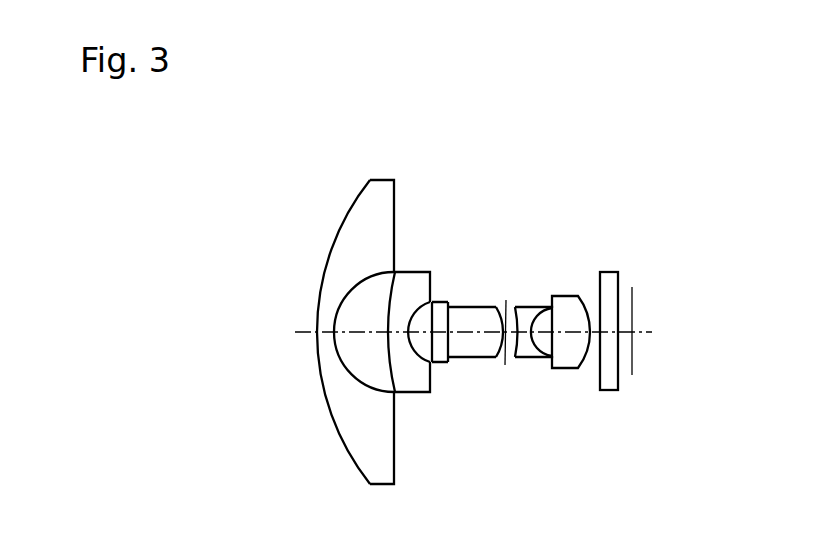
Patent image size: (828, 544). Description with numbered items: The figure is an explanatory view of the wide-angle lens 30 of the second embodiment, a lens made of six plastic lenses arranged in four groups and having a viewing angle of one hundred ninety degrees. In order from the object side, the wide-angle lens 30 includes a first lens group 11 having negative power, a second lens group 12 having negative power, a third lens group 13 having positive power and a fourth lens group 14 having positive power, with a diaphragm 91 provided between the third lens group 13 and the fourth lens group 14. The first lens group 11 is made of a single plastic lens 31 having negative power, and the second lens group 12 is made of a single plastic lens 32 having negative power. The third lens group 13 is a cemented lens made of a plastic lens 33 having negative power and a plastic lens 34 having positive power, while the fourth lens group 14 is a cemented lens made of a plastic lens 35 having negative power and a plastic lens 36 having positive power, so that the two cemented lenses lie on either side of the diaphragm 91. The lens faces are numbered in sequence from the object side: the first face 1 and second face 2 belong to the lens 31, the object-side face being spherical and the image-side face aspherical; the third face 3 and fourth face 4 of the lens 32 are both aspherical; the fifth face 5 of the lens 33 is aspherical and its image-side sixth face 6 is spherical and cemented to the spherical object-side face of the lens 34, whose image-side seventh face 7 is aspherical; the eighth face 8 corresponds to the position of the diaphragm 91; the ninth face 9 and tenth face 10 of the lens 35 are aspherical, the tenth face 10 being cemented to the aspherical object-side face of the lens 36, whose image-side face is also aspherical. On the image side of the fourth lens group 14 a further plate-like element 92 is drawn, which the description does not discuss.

The wide-angle lens 30 is at (616, 138).
The first lens group 11 is at (308, 332).
The plastic lens 31 is at (366, 209).
The second lens group 12 is at (432, 323).
The plastic lens 32 is at (420, 272).
The third lens group 13 is at (510, 197).
The fourth lens group 14 is at (623, 197).
The plastic lens 33 is at (439, 302).
The plastic lens 34 is at (478, 307).
The plastic lens 35 is at (521, 307).
The plastic lens 36 is at (566, 296).
The diaphragm 91 is at (506, 300).
The cover glass / filter plate 92 is at (608, 278).
The first face 1 is at (316, 343).
The second face 2 is at (340, 362).
The third face 3 is at (395, 357).
The fourth face 4 is at (419, 358).
The fifth face 5 is at (434, 346).
The sixth face 6 is at (451, 344).
The seventh face 7 is at (495, 346).
The eighth face 8 is at (505, 350).
The ninth face 9 is at (518, 346).
The tenth face 10 is at (535, 342).